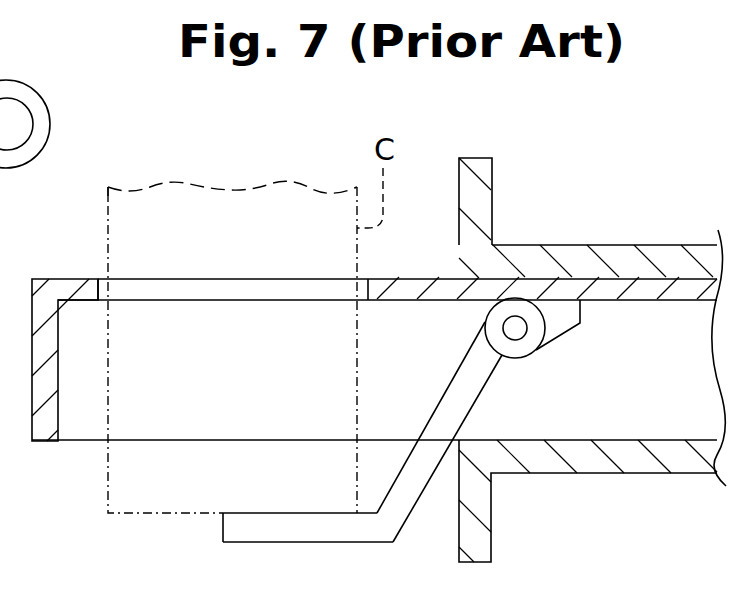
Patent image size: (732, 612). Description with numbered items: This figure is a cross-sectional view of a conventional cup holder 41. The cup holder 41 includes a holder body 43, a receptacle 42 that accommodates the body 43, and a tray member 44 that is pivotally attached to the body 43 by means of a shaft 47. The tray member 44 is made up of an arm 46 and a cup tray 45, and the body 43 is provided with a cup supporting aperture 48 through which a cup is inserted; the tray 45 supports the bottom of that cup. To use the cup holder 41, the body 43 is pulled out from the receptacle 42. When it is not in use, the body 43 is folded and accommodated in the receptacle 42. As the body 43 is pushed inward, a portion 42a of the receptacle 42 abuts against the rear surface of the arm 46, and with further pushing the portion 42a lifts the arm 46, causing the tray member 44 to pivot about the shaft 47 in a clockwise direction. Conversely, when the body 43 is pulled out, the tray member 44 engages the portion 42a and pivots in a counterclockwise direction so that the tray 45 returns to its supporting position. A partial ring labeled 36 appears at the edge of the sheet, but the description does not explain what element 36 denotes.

The ring member 36 is at (3, 80).
The cup holder 41 is at (502, 140).
The receptacle 42 is at (533, 245).
The portion of the receptacle 42a is at (461, 440).
The holder body 43 is at (60, 279).
The tray member 44 is at (409, 514).
The cup tray 45 is at (229, 513).
The arm 46 is at (452, 378).
The shaft 47 is at (519, 341).
The cup supporting aperture 48 is at (98, 290).